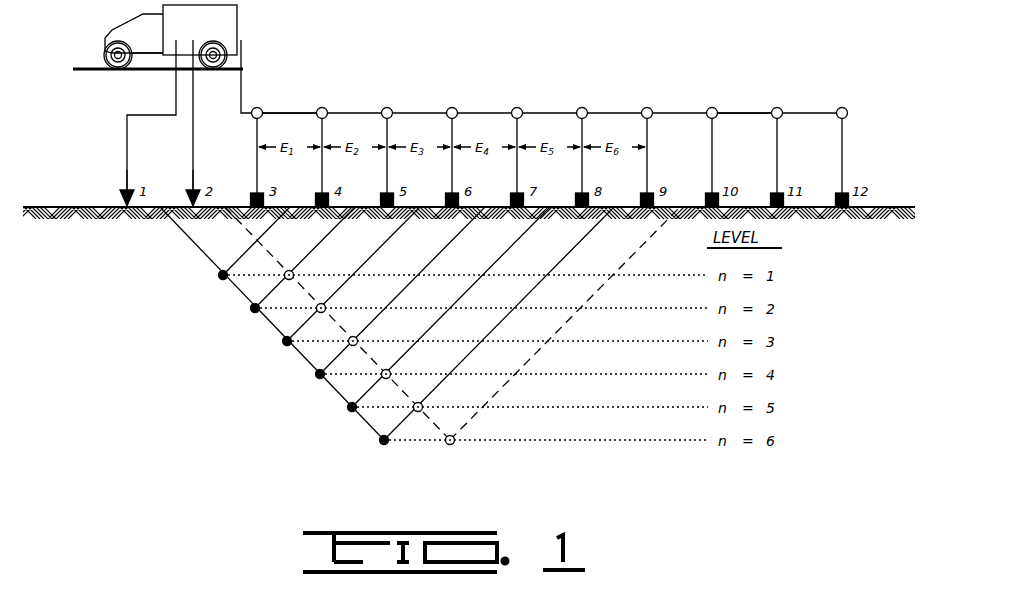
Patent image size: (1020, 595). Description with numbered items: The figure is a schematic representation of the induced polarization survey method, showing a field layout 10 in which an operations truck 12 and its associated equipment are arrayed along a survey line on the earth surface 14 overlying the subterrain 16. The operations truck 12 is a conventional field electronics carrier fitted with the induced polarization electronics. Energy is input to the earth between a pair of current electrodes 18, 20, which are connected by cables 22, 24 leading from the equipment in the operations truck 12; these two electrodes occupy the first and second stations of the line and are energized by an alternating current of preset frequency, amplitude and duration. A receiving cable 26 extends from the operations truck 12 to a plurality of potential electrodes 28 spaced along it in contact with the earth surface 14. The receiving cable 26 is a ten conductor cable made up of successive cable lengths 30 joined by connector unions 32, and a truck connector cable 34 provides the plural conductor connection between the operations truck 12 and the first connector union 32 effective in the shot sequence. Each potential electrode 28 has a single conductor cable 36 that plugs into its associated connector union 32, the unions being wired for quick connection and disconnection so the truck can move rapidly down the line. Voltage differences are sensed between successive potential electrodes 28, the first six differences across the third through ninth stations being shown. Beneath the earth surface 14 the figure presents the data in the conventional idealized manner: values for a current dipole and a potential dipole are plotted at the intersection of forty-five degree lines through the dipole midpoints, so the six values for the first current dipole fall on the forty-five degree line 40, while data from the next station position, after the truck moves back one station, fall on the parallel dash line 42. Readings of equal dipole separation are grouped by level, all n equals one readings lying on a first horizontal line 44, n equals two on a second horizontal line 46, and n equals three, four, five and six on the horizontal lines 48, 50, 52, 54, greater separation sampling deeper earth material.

The field layout 10 is at (578, 40).
The operations truck 12 is at (212, 26).
The earth surface 14 is at (68, 205).
The subterrain 16 is at (144, 348).
The current electrode 18 is at (131, 187).
The current electrode 20 is at (197, 186).
The cable 22 is at (148, 116).
The cable 24 is at (195, 111).
The receiving cable 26 is at (478, 112).
The potential electrodes 28 is at (263, 194).
The cable lengths 30 is at (307, 113).
The connector unions 32 is at (261, 109).
The truck connector cable 34 is at (245, 80).
The single conductor cable 36 is at (256, 165).
The 45° line 40 is at (300, 356).
The dash line 42 is at (410, 387).
The first horizontal line 44 is at (517, 277).
The second horizontal line 46 is at (548, 309).
The horizontal line 48 is at (590, 342).
The horizontal line 50 is at (613, 374).
The horizontal line 52 is at (627, 407).
The horizontal line 54 is at (636, 440).